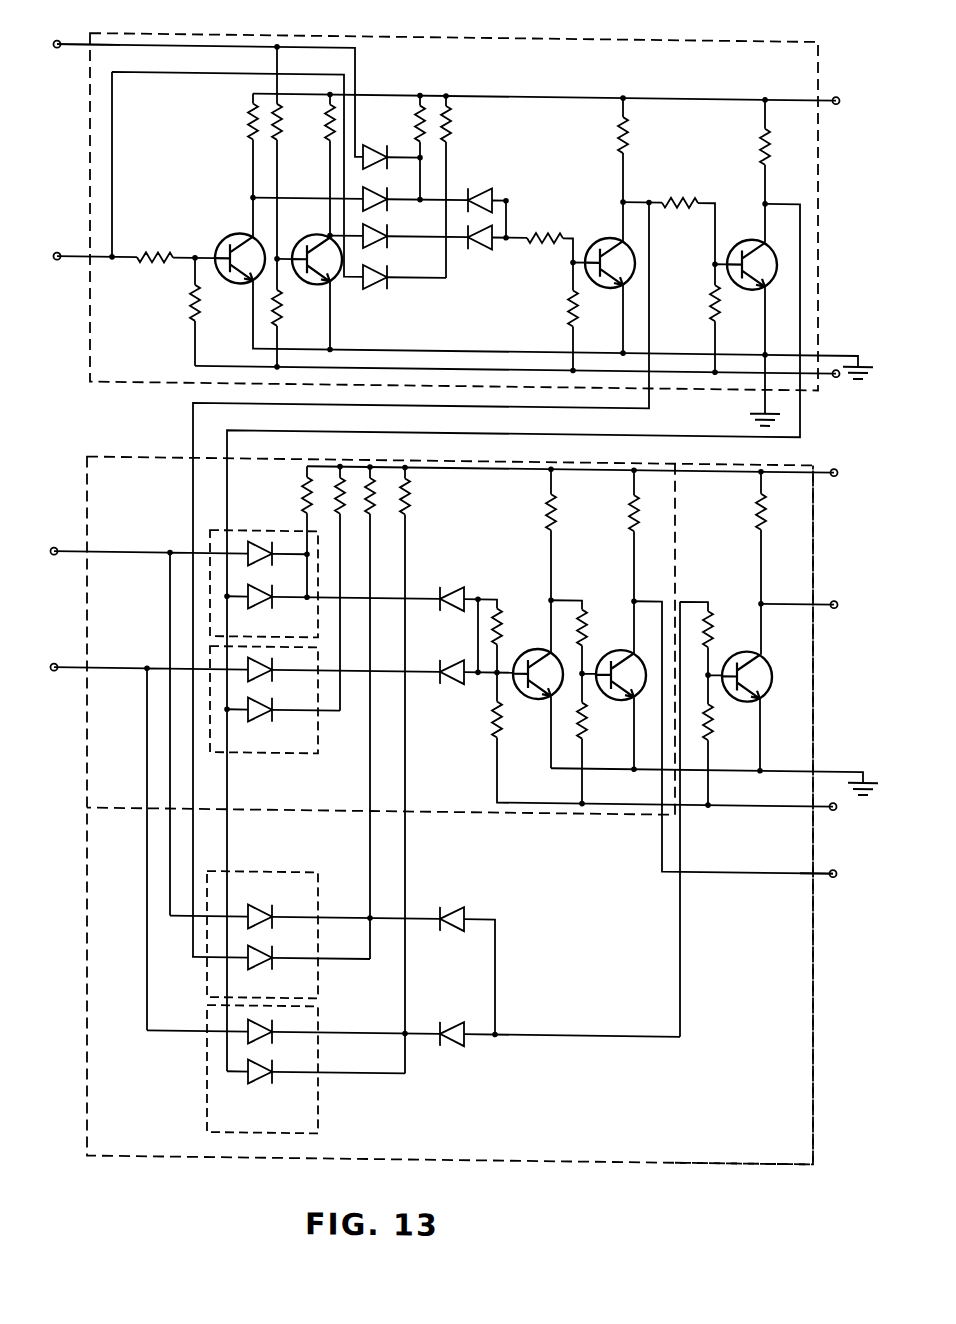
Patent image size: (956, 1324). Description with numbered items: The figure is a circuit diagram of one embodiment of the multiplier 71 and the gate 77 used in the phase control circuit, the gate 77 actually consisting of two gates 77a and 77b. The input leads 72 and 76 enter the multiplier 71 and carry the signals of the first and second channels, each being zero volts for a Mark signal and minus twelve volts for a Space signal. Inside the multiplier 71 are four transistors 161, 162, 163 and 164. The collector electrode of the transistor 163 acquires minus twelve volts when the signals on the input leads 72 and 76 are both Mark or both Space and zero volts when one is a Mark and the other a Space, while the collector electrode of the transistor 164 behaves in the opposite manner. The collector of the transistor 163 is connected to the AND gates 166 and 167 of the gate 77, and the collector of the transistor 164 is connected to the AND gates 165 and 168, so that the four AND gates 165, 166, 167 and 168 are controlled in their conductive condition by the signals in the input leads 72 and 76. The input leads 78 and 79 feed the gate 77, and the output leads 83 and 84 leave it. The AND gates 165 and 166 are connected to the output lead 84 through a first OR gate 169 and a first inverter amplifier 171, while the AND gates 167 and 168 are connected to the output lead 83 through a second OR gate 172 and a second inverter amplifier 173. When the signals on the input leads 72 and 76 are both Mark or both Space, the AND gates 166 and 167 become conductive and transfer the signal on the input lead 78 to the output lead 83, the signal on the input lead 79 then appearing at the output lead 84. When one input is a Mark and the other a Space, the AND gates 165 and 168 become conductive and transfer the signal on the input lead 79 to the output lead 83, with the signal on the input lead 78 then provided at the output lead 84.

The multiplier 71 is at (476, 47).
The input lead 72 is at (68, 260).
The input lead 76 is at (68, 48).
The gate 77 is at (134, 1164).
The gate 77a is at (166, 472).
The gate 77b is at (694, 1150).
The input lead 78 is at (70, 545).
The input lead 79 is at (66, 672).
The output lead 83 is at (822, 603).
The output lead 84 is at (820, 876).
The transistor 161 is at (236, 237).
The transistor 162 is at (328, 286).
The transistor 163 is at (610, 236).
The transistor 164 is at (758, 236).
The AND gate 165 is at (284, 637).
The AND gate 166 is at (282, 754).
The AND gate 167 is at (283, 903).
The AND gate 168 is at (271, 1123).
The first OR gate 169 is at (450, 647).
The first inverter amplifier 171 is at (598, 544).
The second OR gate 172 is at (460, 985).
The second inverter amplifier 173 is at (737, 554).